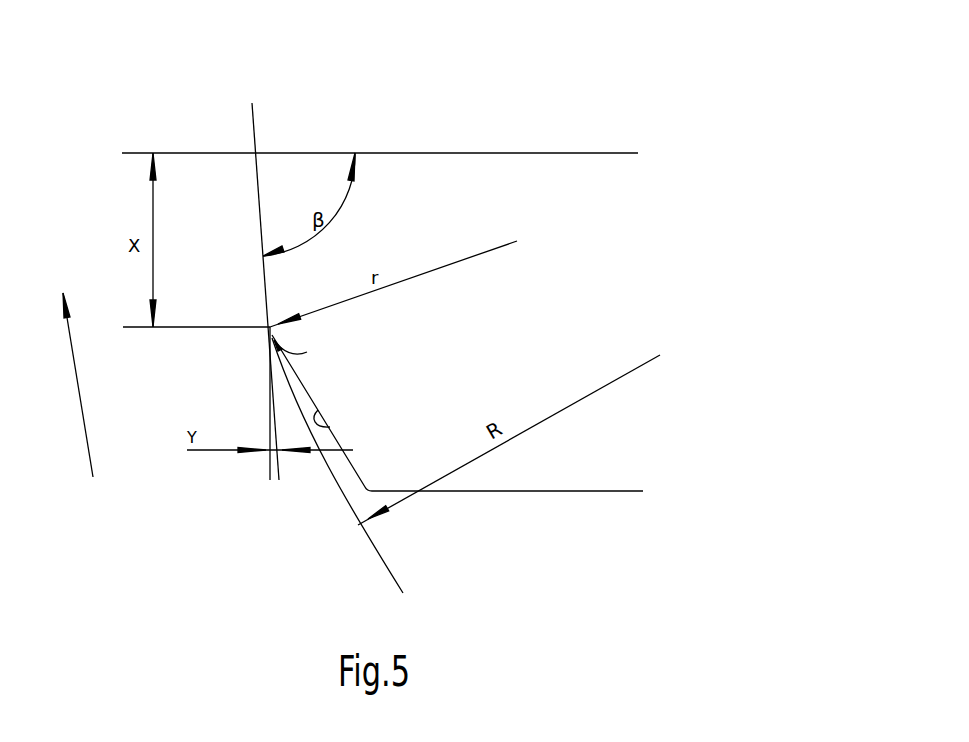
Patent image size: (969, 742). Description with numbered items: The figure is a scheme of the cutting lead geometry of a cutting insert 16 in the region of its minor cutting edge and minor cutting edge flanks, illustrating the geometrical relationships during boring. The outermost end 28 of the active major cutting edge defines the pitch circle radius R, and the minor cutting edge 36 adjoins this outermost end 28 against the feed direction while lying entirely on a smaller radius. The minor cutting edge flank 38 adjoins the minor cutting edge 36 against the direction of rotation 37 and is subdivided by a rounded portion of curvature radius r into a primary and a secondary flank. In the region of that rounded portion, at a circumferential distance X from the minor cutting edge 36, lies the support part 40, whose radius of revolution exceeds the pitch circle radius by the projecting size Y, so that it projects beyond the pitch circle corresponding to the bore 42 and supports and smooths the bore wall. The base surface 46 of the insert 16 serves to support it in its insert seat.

The outermost end 28 is at (380, 98).
The minor cutting edge 36 is at (253, 153).
The cutting insert 16 is at (455, 192).
The minor cutting edge flank 38 is at (257, 210).
The support part 40 is at (268, 322).
The direction of rotation 37 is at (75, 386).
The bore 42 is at (378, 555).
The base surface 46 is at (542, 491).